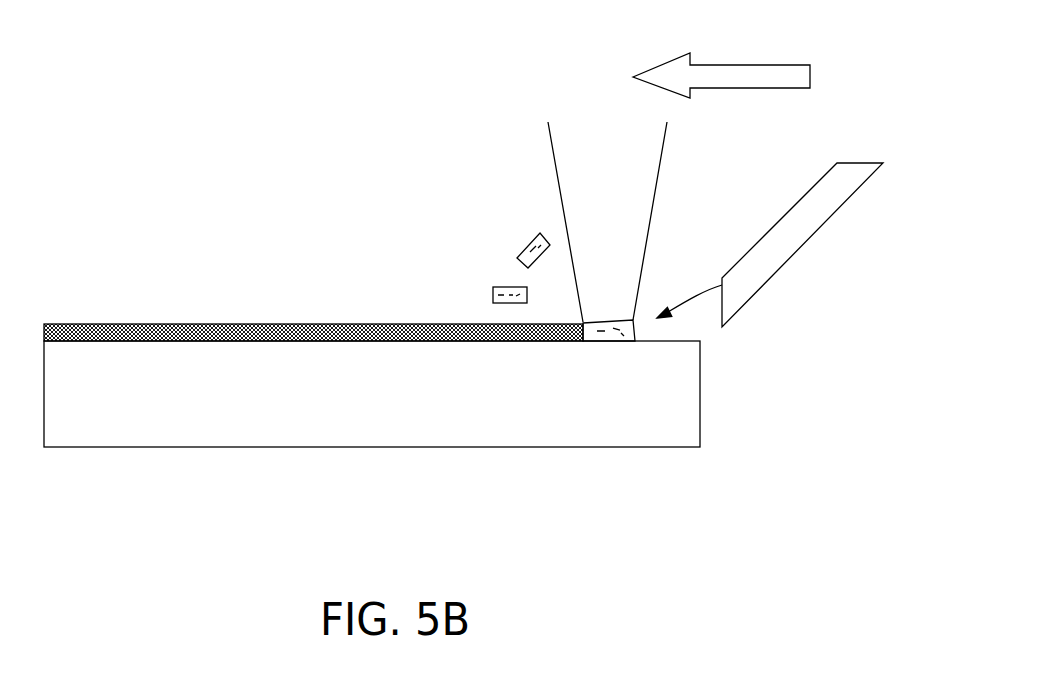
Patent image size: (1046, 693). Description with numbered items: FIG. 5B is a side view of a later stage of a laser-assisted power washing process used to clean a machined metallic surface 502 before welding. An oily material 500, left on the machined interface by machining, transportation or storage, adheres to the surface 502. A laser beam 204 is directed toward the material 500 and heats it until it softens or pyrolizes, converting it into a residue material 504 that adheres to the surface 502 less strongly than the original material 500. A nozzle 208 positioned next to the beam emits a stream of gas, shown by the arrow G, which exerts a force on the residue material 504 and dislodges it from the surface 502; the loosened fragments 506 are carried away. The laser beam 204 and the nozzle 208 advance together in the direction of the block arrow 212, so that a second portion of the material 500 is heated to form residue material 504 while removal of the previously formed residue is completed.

The material 500 is at (132, 333).
The machined metallic surface 502 is at (250, 415).
The residue material 504 is at (615, 337).
The ablated particles 506 is at (487, 257).
The laser beam 204 is at (632, 196).
The nozzle 208 is at (760, 273).
The block arrow 212 is at (721, 65).